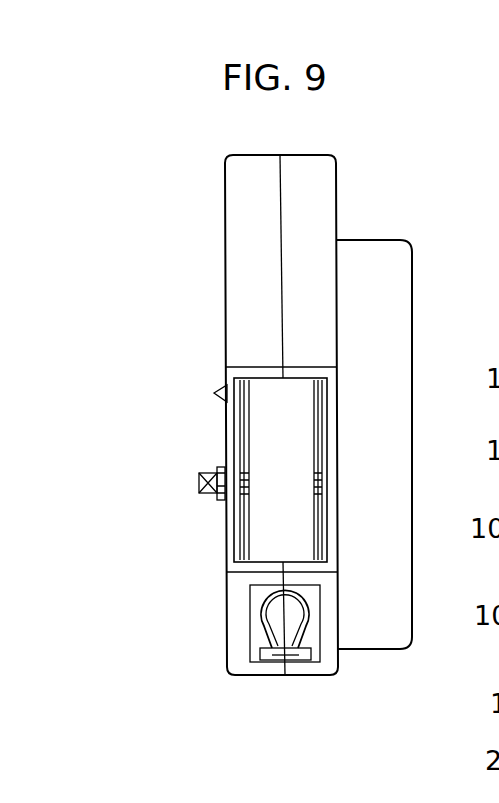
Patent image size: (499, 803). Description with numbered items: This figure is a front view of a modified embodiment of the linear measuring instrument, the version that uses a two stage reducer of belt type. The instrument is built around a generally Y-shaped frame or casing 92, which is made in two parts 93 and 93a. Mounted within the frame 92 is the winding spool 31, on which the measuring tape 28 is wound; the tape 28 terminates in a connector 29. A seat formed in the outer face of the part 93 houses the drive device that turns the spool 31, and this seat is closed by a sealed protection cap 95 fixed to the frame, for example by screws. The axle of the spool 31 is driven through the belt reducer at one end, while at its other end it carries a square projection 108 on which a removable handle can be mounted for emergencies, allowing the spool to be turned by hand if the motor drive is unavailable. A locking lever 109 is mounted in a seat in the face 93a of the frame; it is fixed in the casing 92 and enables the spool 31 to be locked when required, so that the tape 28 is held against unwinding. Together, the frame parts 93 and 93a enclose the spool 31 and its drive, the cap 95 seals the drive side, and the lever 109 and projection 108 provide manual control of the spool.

The frame 92 is at (350, 151).
The frame part 93 is at (320, 208).
The frame part 93a is at (241, 184).
The protection cap 95 is at (395, 326).
The locking lever 109 is at (226, 386).
The winding spool 31 is at (245, 445).
The square projection 108 is at (199, 484).
The connector 29 is at (262, 607).
The measuring tape 28 is at (305, 657).